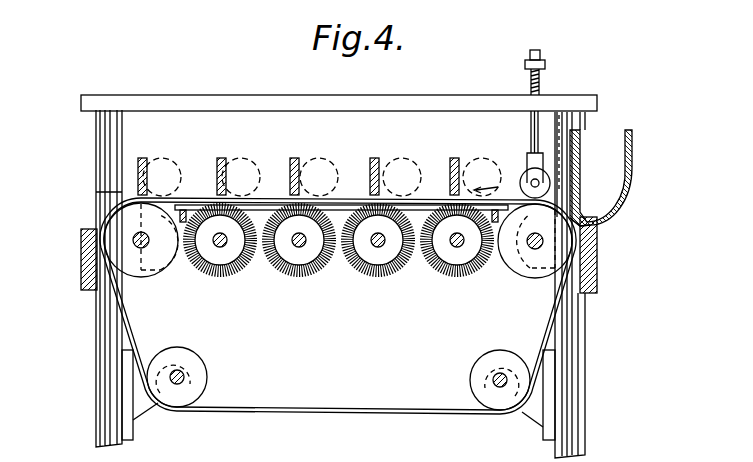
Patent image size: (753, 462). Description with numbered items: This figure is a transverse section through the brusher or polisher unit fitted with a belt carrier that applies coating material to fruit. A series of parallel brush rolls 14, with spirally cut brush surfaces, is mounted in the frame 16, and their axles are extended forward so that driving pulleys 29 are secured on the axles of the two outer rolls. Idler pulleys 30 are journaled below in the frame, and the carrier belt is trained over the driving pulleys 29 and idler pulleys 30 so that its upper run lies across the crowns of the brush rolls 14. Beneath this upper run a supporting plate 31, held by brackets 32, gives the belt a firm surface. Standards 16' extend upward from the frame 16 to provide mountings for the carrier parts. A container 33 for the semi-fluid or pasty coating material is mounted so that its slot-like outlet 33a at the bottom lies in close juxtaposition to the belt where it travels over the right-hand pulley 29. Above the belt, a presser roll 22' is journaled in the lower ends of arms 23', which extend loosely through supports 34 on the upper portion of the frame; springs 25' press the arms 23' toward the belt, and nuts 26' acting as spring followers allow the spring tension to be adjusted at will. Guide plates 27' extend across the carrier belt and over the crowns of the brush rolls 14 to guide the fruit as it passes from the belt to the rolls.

The brush rolls 14 is at (222, 270).
The frame 16 is at (333, 284).
The standards 16' is at (592, 198).
The presser roll 22' is at (512, 171).
The arms 23' is at (516, 132).
The springs 25' is at (558, 82).
The nuts 26' is at (555, 58).
The guide plates 27' is at (319, 157).
The driving pulleys 29 is at (158, 268).
The idler pulleys 30 is at (210, 380).
The supporting plate 31 is at (340, 204).
The brackets 32 is at (194, 207).
The container 33 is at (632, 178).
The slot-like outlet 33a is at (578, 217).
The supports 34 is at (292, 98).